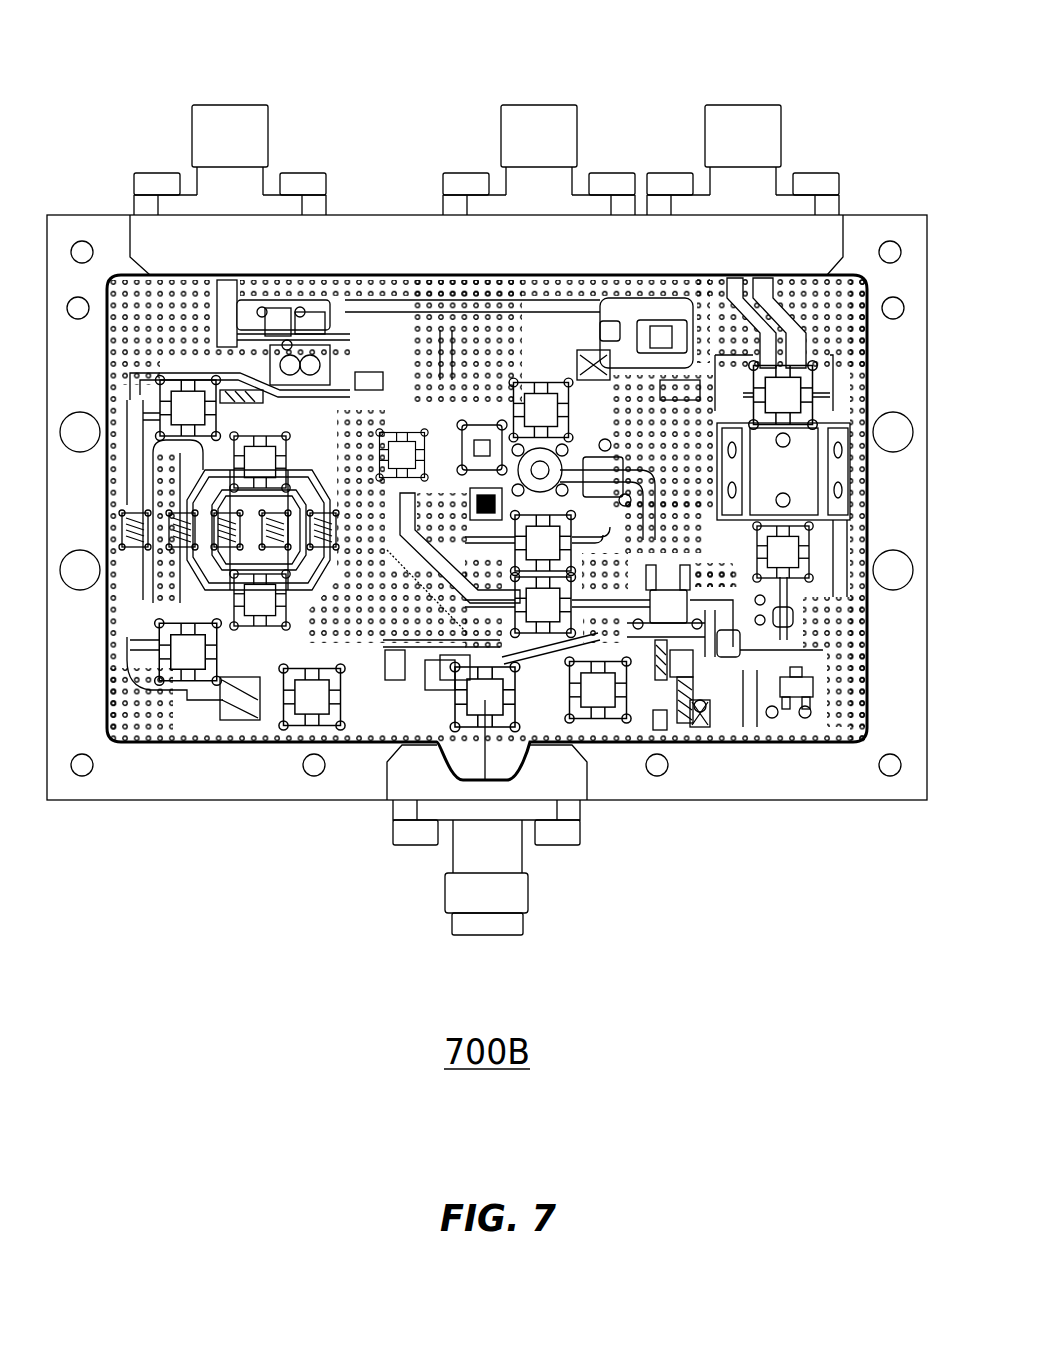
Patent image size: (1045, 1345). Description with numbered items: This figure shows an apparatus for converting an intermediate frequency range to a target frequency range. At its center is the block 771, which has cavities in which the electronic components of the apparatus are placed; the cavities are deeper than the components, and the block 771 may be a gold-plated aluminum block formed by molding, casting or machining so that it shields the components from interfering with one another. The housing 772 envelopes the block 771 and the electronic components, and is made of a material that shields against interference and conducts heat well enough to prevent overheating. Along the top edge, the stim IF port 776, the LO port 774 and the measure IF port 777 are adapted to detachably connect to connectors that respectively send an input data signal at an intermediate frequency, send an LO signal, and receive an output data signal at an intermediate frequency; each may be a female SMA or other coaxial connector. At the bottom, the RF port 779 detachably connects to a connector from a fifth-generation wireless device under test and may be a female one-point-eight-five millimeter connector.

The block 771 is at (433, 310).
The housing 772 is at (730, 800).
The LO port 774 is at (538, 103).
The stim IF port 776 is at (222, 103).
The measure IF port 777 is at (743, 103).
The RF port 779 is at (445, 898).